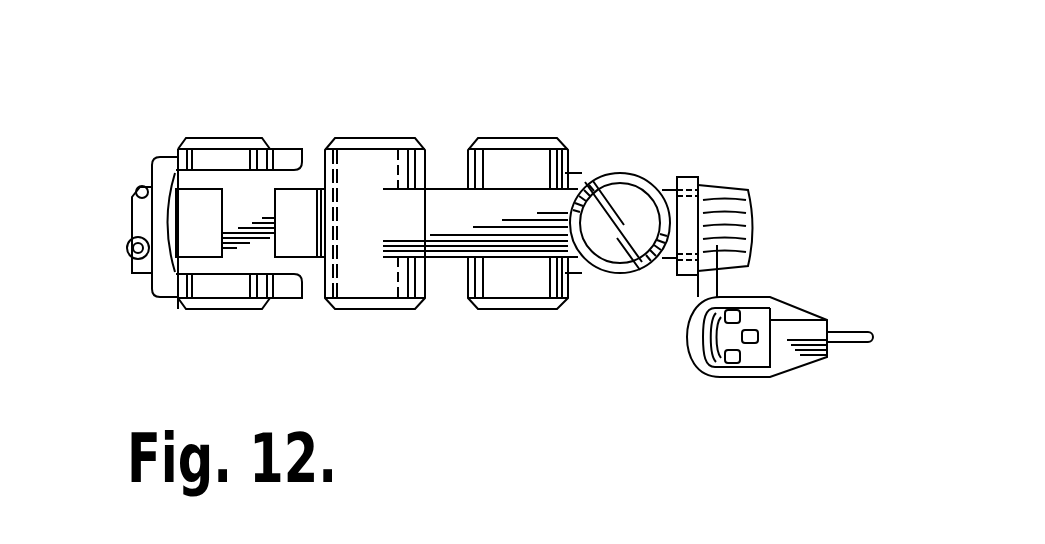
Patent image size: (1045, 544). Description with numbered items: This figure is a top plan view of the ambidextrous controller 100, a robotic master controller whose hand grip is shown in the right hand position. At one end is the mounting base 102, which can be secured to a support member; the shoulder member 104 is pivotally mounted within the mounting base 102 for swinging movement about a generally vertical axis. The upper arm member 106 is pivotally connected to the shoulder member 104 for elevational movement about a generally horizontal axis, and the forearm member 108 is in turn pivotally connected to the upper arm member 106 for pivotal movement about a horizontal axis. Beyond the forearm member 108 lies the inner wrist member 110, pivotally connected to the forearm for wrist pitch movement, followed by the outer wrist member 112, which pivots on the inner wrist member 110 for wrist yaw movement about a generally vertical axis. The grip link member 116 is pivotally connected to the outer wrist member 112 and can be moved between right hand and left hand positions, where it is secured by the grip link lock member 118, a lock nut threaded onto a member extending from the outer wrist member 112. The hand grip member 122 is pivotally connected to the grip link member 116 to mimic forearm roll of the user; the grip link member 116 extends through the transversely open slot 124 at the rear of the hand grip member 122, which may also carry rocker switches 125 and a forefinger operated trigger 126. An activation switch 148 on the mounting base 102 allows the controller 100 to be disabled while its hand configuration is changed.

The ambidextrous controller 100 is at (700, 77).
The mounting base 102 is at (164, 287).
The shoulder member 104 is at (174, 197).
The upper arm member 106 is at (257, 262).
The forearm member 108 is at (443, 197).
The inner wrist member 110 is at (578, 273).
The outer wrist member 112 is at (663, 178).
The grip link member 116 is at (698, 294).
The grip link lock member 118 is at (750, 203).
The hand grip member 122 is at (800, 362).
The transversely open slot 124 is at (757, 345).
The rocker switches 125 is at (703, 340).
The trigger 126 is at (855, 331).
The activation switch 148 is at (128, 244).